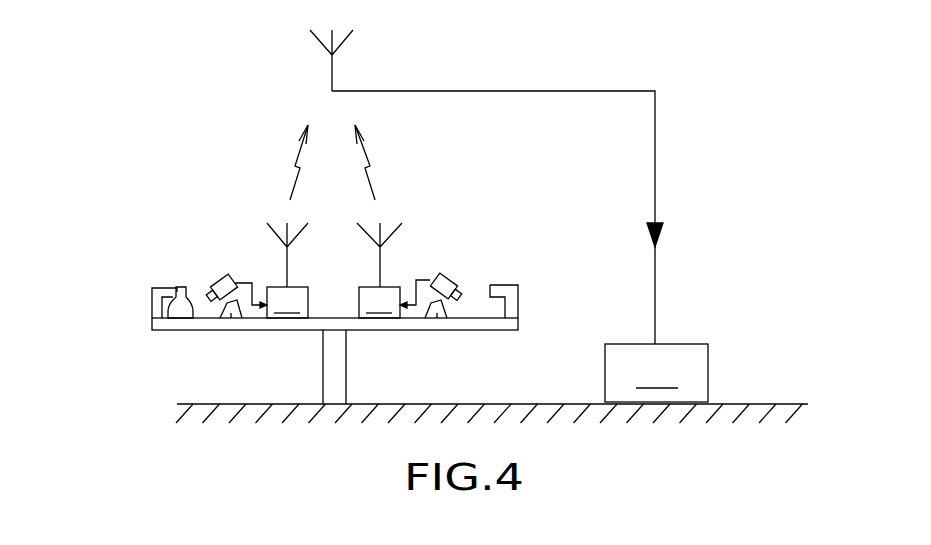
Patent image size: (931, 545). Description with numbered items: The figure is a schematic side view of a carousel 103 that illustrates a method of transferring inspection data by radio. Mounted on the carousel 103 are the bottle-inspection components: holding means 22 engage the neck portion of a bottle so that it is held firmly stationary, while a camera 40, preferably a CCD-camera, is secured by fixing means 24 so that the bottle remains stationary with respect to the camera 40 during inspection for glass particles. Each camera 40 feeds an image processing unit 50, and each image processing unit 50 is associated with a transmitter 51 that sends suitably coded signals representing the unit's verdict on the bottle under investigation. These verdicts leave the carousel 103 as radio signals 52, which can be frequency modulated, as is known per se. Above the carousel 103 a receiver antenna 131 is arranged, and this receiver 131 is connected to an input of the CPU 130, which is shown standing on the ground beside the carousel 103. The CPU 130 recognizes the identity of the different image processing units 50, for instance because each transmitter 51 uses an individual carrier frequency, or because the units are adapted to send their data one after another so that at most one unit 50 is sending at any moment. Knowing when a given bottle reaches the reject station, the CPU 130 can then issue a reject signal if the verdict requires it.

The holding means 22 is at (152, 307).
The fixing means 24 is at (232, 320).
The camera means 40 is at (221, 278).
The image processing unit 50 is at (333, 302).
The transmitter 51 is at (270, 228).
The radio signals 52 is at (242, 162).
The carousel 103 is at (168, 331).
The CPU 130 is at (656, 373).
The receiver (antenna) 131 is at (320, 42).